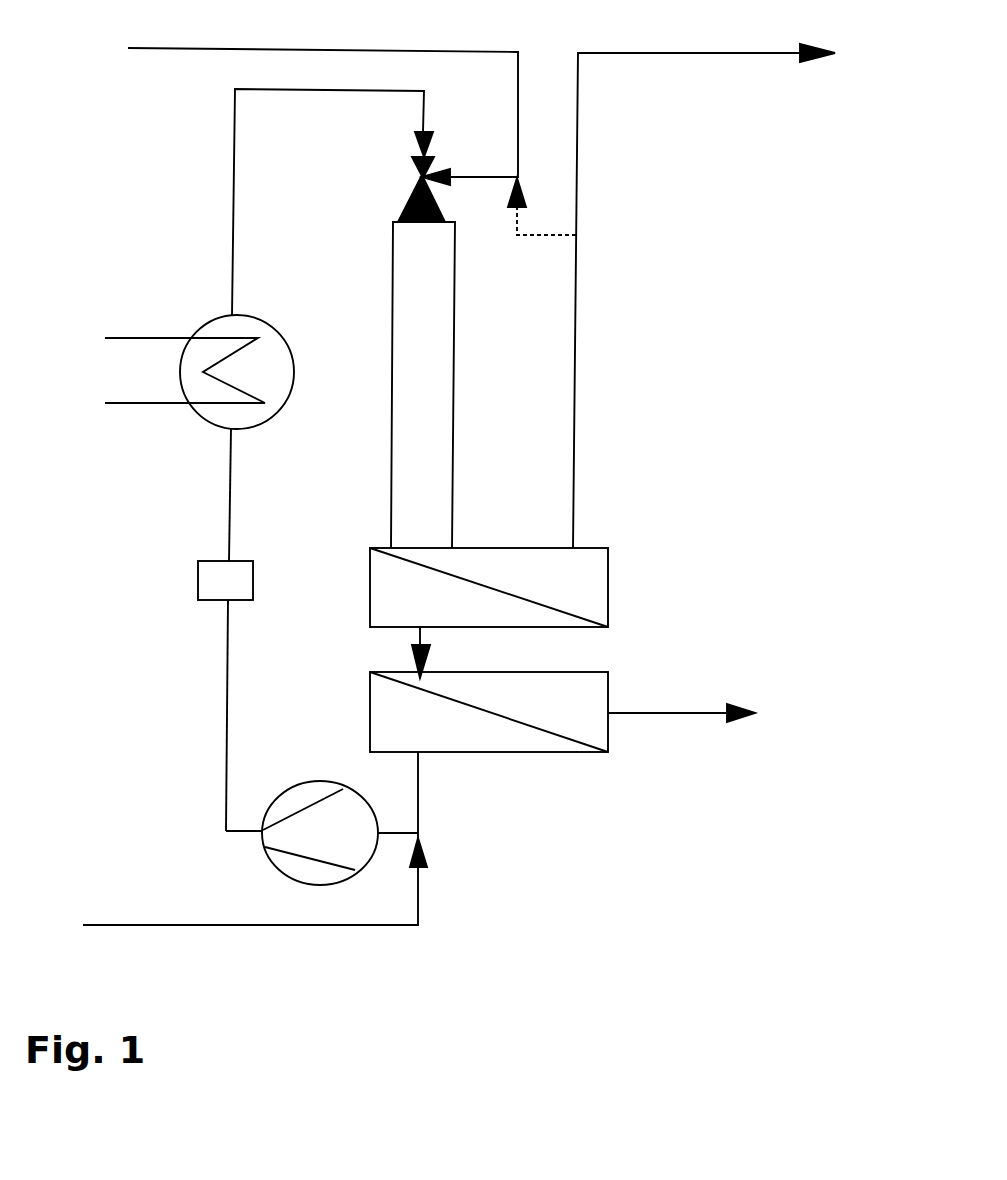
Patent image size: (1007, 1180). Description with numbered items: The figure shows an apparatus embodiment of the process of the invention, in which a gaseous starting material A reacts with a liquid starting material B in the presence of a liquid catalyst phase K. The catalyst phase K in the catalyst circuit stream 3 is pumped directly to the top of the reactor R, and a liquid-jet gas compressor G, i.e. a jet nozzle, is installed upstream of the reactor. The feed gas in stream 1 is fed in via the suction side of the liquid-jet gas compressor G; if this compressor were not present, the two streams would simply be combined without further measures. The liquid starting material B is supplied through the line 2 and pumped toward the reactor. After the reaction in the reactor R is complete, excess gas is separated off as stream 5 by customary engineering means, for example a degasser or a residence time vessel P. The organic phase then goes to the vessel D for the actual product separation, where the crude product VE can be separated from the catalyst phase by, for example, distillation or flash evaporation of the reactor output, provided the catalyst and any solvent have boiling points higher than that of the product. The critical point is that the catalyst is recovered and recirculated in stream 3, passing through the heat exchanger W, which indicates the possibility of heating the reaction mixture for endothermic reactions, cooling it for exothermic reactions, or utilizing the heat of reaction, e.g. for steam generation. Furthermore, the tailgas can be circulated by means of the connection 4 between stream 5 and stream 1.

The feed gas stream 1 is at (323, 98).
The feed line for component B 2 is at (255, 859).
The catalyst circuit stream 3 is at (305, 460).
The connection 4 is at (542, 236).
The excess gas stream 5 is at (704, 296).
The gaseous starting material A is at (76, 42).
The liquid starting material B is at (54, 919).
The heat exchanger W is at (199, 310).
The liquid catalyst phase K is at (225, 583).
The liquid-jet gas compressor G is at (388, 177).
The reactor R is at (423, 385).
The residence time vessel P is at (489, 613).
The vessel D is at (489, 712).
The crude product VE is at (703, 716).